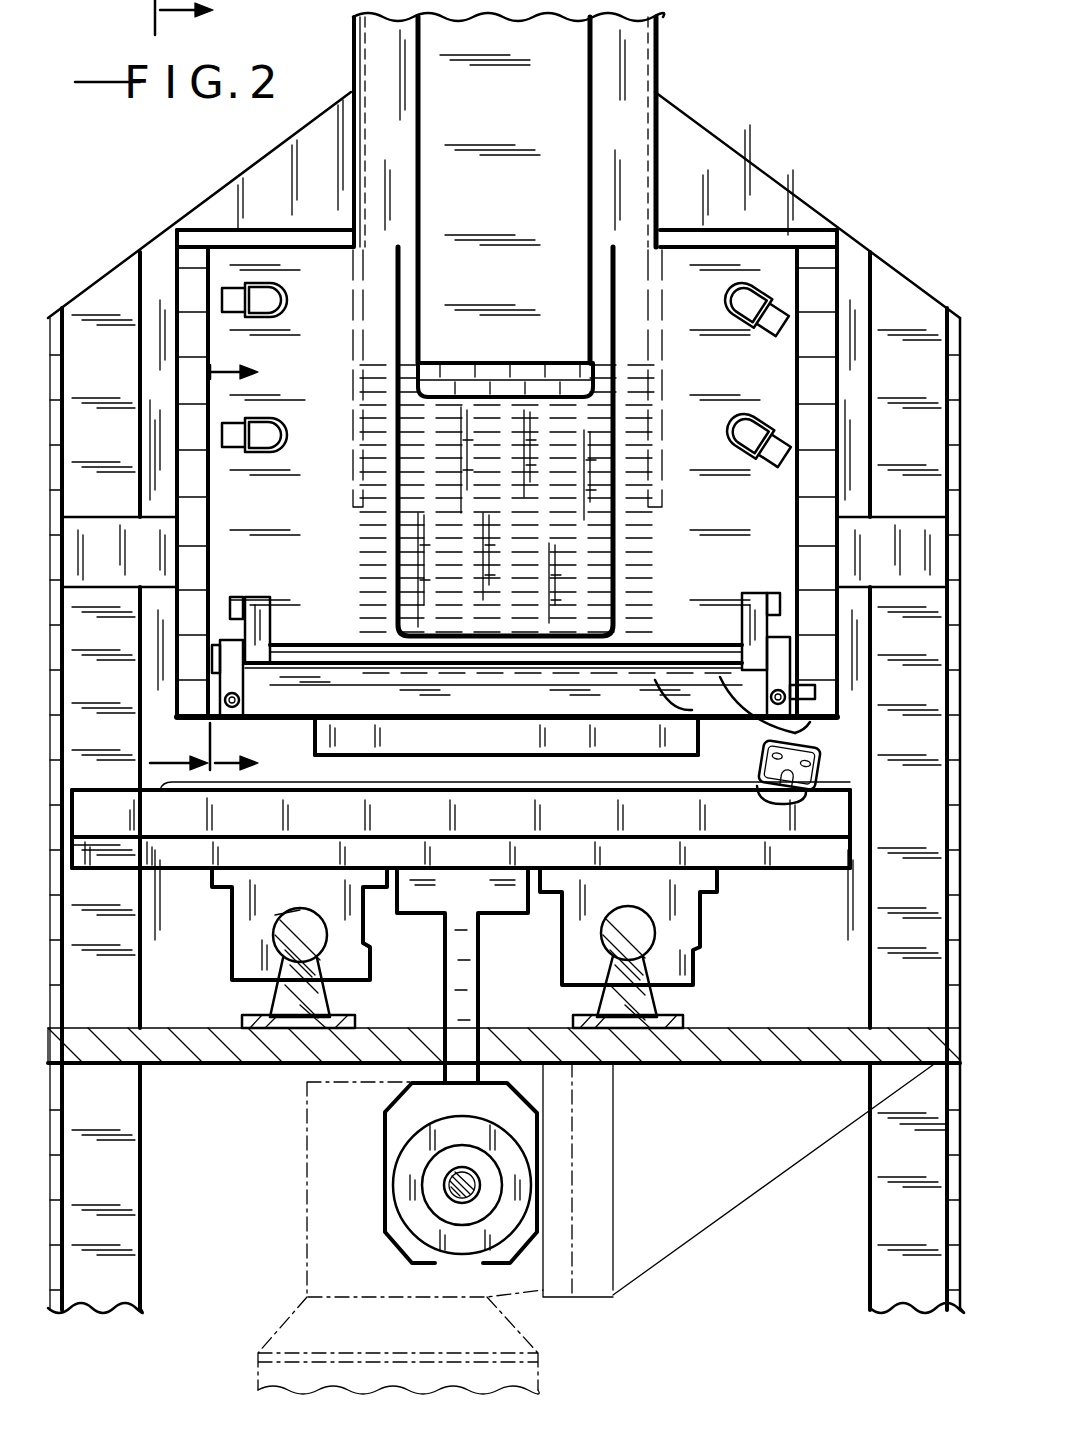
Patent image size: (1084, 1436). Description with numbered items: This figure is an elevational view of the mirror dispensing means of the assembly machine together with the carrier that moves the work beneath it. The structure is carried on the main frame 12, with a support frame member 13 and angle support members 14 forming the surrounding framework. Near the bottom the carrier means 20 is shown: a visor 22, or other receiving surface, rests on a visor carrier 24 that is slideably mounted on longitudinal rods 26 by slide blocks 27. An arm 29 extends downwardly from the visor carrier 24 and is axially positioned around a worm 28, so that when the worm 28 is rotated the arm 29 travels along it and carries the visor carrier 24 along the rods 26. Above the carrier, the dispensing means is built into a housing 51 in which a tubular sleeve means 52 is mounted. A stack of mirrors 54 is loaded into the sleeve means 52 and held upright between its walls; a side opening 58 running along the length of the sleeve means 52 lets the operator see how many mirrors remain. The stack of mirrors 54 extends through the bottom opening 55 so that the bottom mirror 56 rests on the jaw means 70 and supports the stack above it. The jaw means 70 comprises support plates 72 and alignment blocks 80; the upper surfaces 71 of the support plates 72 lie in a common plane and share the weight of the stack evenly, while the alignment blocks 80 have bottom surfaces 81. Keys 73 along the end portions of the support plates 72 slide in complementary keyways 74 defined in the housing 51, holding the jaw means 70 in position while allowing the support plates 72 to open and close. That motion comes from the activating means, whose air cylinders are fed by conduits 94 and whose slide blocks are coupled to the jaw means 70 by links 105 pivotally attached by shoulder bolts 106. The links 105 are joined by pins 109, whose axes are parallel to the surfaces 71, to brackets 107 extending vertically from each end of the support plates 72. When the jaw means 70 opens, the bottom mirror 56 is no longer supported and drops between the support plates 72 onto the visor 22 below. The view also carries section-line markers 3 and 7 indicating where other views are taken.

The section line 3- 3 is at (245, 568).
The section line 7- 7 is at (194, 385).
The main frame 12 is at (268, 162).
The support frame member 13 is at (100, 541).
The angle support member 14 is at (97, 304).
The carrier means 20 is at (196, 881).
The visor 22 is at (358, 782).
The visor carrier 24 is at (415, 826).
The rods 26 is at (280, 998).
The slide blocks 27 is at (232, 935).
The worm 28 is at (450, 1185).
The arm 29 is at (470, 898).
The housing 51 is at (752, 346).
The sleeve means 52 is at (350, 33).
The stack of mirrors 54 is at (487, 368).
The bottom opening 55 is at (668, 496).
The bottom mirror 56 is at (725, 717).
The side opening 58 is at (426, 208).
The jaw means 70 is at (665, 758).
The upper surfaces 71 is at (815, 734).
The support plates 72 is at (298, 722).
The keys 73 is at (222, 690).
The keyways 74 is at (213, 690).
The alignment blocks 80 is at (478, 731).
The bottom surfaces 81 is at (505, 770).
The conduits 94 is at (785, 300).
The links 105 is at (743, 618).
The shoulder bolts 106 is at (775, 592).
The brackets 107 is at (796, 650).
The pins 109 is at (320, 645).